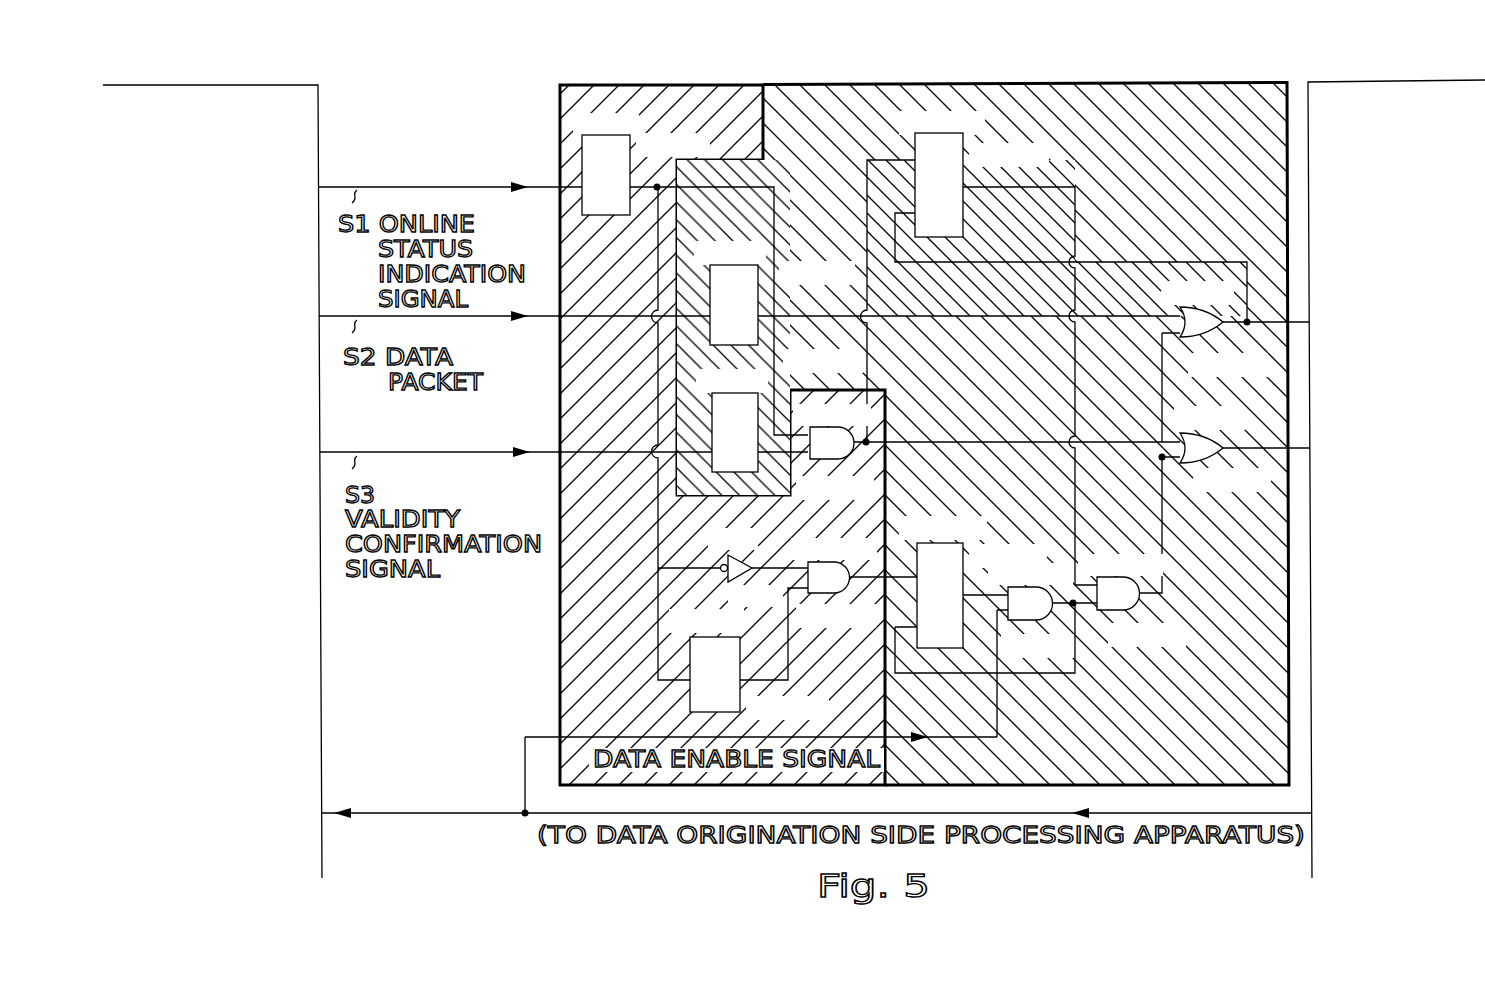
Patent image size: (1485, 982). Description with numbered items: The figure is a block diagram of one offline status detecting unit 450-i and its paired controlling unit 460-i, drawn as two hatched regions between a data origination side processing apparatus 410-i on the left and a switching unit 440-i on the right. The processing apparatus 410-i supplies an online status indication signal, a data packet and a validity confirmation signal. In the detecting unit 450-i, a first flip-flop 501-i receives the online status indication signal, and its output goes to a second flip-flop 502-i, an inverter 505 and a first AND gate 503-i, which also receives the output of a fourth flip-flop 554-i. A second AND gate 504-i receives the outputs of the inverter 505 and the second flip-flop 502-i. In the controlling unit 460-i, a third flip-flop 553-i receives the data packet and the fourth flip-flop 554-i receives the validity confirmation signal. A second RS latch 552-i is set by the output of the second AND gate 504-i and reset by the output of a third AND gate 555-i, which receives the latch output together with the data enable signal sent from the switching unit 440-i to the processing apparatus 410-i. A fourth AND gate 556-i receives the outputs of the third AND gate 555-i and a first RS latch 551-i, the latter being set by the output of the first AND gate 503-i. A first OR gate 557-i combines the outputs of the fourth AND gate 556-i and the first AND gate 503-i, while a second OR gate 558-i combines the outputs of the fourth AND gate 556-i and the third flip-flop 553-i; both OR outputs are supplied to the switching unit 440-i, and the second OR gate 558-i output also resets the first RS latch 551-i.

The data origination side processing apparatus 410-i is at (185, 85).
The switching unit 440-i is at (1387, 82).
The offline status detecting unit 450-i is at (560, 85).
The controlling unit 460-i is at (860, 85).
The flip-flop FF-A 501-i is at (630, 140).
The flip-flop FF-D 502-i is at (740, 692).
The AND gate AND-A 503-i is at (810, 461).
The AND gate AND-B 504-i is at (808, 593).
The inverter INV 505 is at (740, 578).
The RS latch RSL-A 551-i is at (963, 155).
The RS latch RSL-B 552-i is at (963, 567).
The flip-flop FF-B 553-i is at (758, 265).
The flip-flop FF-C 554-i is at (767, 396).
The AND gate AND-C 555-i is at (1024, 620).
The AND gate AND-D 556-i is at (1108, 610).
The OR gate OR-A 557-i is at (1193, 463).
The OR gate OR-B 558-i is at (1190, 337).